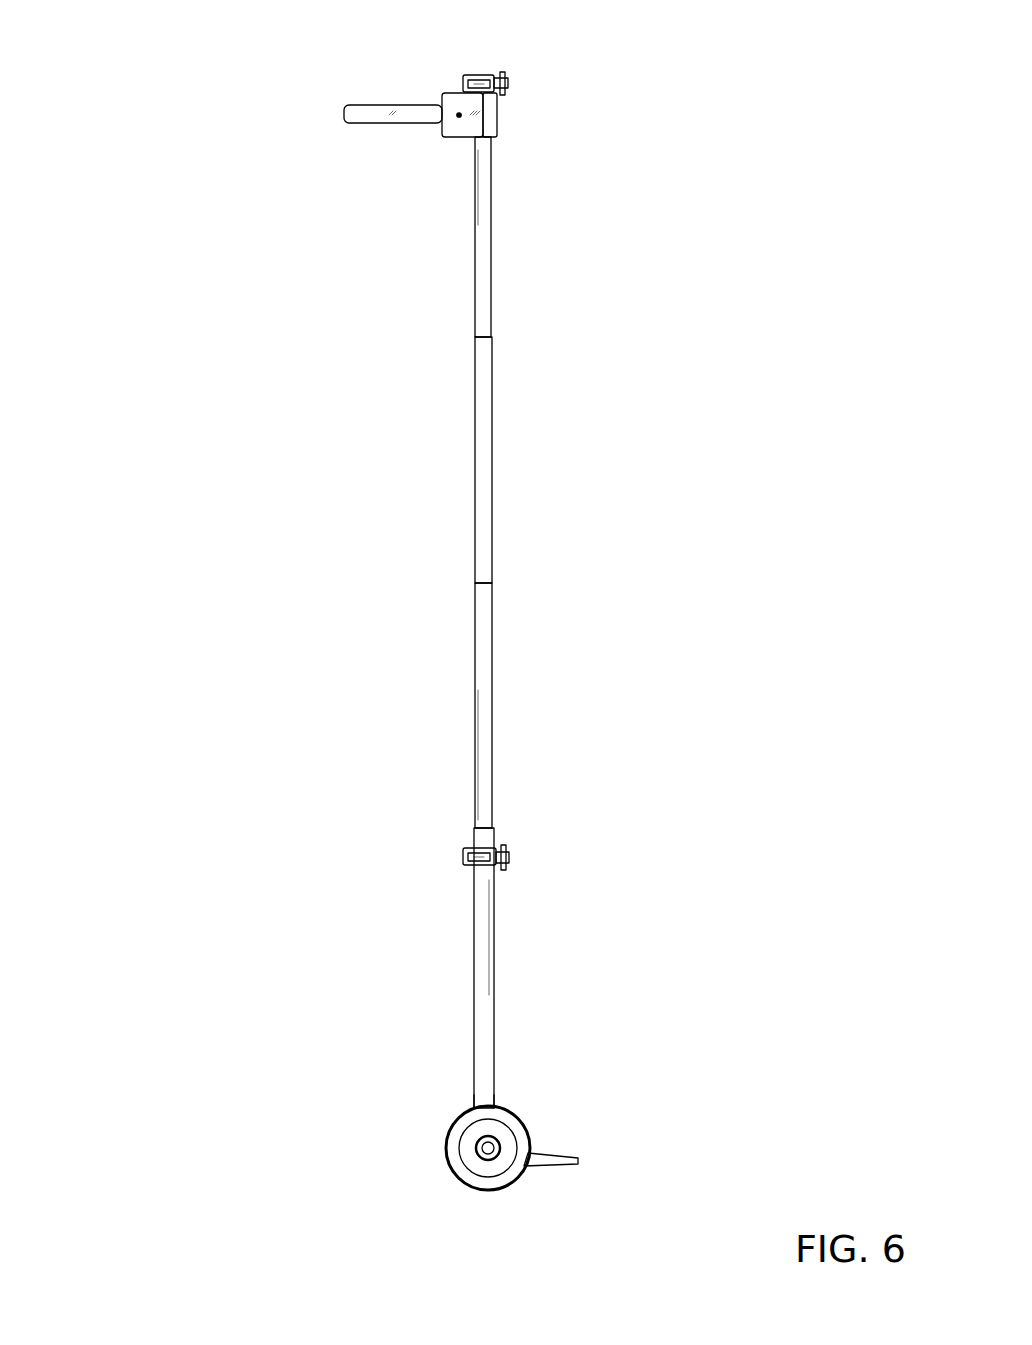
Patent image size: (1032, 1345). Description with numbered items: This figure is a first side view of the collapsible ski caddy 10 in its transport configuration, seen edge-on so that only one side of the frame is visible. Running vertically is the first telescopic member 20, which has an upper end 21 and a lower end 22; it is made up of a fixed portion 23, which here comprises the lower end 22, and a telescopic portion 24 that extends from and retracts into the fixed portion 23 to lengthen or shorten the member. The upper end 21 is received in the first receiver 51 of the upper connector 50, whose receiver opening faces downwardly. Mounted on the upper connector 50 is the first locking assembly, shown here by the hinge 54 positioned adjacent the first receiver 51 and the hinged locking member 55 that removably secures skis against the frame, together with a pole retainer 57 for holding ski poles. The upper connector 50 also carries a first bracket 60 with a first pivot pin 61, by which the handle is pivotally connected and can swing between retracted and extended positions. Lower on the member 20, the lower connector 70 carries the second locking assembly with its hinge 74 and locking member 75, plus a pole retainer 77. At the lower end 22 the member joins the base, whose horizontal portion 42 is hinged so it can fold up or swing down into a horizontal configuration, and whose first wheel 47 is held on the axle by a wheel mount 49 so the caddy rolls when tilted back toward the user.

The collapsible ski caddy 10 is at (160, 124).
The first telescopic member 20 is at (462, 641).
The upper end 21 is at (492, 152).
The lower end 22 is at (473, 1106).
The fixed portion 23 is at (474, 1000).
The telescopic portion 24 is at (492, 528).
The horizontal portion 42 is at (565, 1153).
The first wheel 47 is at (503, 1188).
The wheel mount 49 is at (486, 1150).
The upper connector 50 is at (487, 76).
The first receiver 51 is at (498, 118).
The hinge 54 is at (508, 84).
The locking member 55 is at (508, 78).
The pole retainer 57 is at (478, 77).
The first bracket 60 is at (443, 97).
The first pivot pin 61 is at (458, 115).
The lower connector 70 is at (463, 852).
The hinge 74 is at (510, 862).
The locking member 75 is at (510, 850).
The pole retainer 77 is at (464, 862).